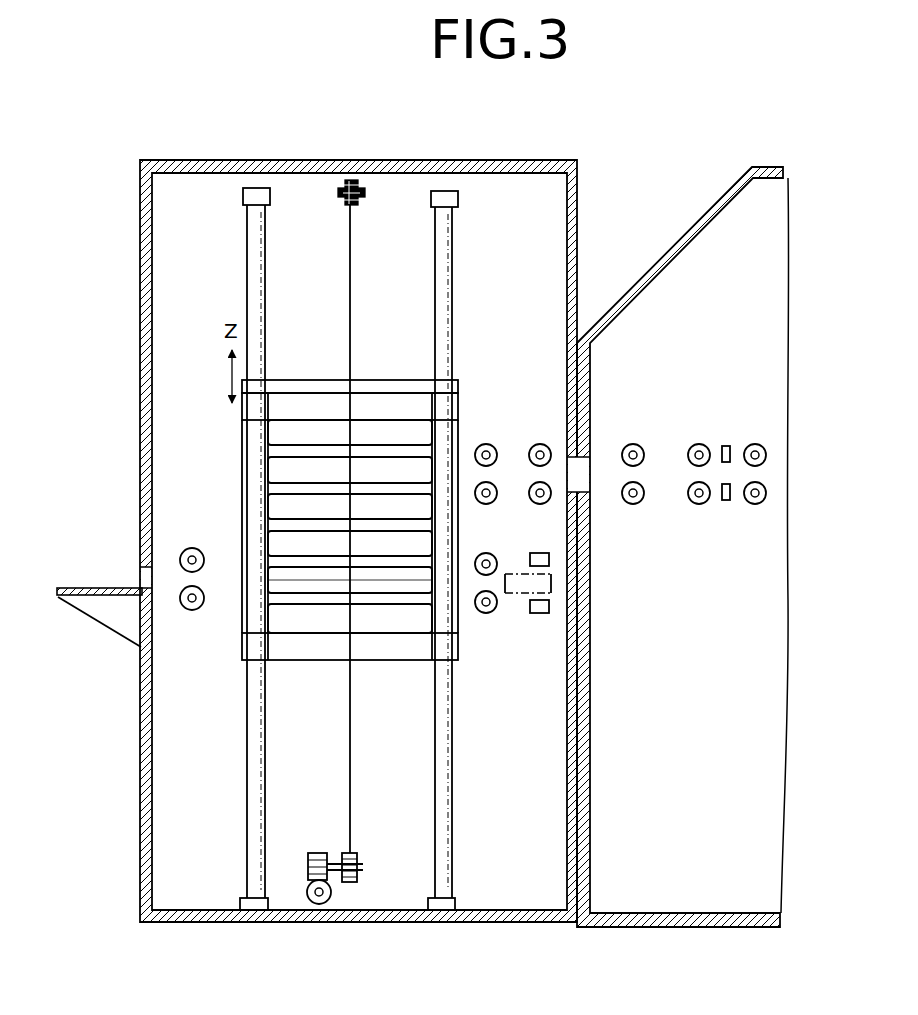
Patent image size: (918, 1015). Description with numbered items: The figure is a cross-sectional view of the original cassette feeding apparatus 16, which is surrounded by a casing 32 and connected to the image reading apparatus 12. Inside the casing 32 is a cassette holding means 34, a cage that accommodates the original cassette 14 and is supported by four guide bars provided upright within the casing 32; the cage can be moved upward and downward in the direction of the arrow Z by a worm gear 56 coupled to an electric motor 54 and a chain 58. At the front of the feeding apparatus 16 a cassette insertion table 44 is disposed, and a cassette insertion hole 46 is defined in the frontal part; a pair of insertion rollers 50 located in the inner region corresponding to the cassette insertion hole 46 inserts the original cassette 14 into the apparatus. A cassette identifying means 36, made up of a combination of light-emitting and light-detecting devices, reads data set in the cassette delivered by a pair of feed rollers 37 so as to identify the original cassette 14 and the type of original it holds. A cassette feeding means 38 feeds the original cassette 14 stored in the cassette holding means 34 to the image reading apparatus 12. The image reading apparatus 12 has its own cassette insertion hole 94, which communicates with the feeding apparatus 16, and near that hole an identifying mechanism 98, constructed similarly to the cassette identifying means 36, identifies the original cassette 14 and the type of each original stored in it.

The image reading apparatus 12 is at (703, 906).
The original cassette 14 is at (263, 588).
The original cassette feeding apparatus 16 is at (137, 870).
The casing 32 is at (470, 920).
The cassette holding means 34 is at (379, 673).
The cassette identifying means 36 is at (554, 551).
The feed rollers 37 is at (485, 614).
The cassette feeding means 38 is at (519, 440).
The cassette insertion table 44 is at (93, 598).
The cassette insertion hole 46 is at (140, 583).
The insertion rollers 50 is at (192, 546).
The electric motor 54 is at (338, 914).
The worm gear 56 is at (326, 846).
The chain 58 is at (352, 783).
The cassette insertion hole 94 is at (588, 477).
The identifying mechanism 98 is at (731, 441).